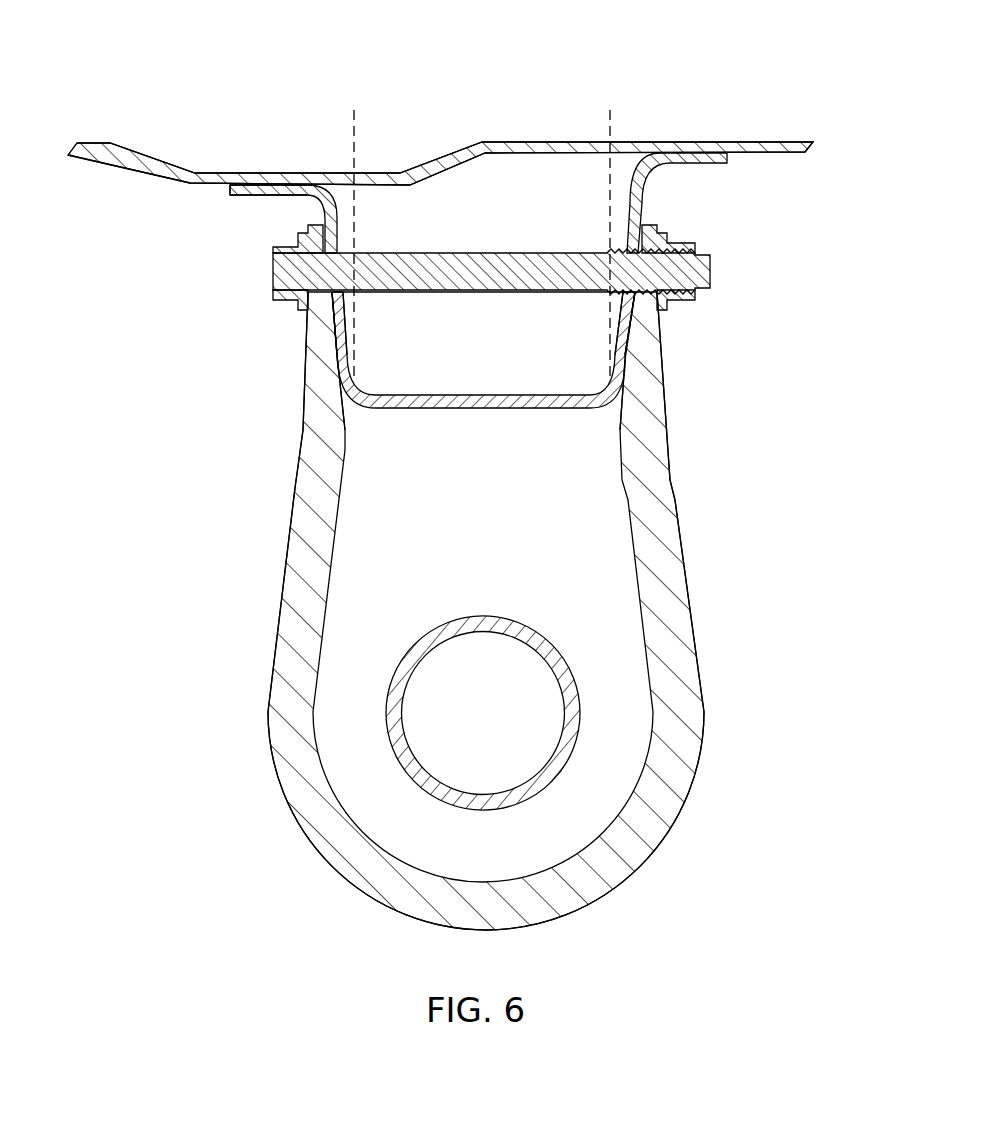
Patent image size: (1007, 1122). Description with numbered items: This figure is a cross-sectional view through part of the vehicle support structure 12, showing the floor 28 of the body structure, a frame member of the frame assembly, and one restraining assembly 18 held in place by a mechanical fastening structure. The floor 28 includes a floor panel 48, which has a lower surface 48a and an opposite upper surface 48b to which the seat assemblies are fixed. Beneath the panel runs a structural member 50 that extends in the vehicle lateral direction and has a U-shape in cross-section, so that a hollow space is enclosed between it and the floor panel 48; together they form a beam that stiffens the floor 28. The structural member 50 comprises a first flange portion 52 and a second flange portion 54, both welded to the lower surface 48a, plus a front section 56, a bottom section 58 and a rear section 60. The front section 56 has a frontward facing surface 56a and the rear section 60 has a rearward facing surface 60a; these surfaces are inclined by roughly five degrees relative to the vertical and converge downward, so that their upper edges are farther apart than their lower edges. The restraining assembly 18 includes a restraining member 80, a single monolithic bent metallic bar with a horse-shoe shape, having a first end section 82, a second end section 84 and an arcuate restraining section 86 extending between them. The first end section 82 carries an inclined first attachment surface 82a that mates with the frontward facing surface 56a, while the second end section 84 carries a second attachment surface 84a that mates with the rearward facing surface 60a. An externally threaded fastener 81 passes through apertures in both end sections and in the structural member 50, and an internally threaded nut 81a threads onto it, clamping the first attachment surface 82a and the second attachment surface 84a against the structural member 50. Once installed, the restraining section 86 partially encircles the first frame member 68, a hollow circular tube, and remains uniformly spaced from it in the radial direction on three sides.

The vehicle support structure 12 is at (592, 38).
The restraining assembly 18 is at (482, 625).
The floor 28 is at (250, 161).
The floor panel 48 is at (513, 142).
The lower surface 48a is at (561, 155).
The upper surface 48b is at (531, 142).
The structural member 50 is at (333, 217).
The first flange portion 52 is at (248, 198).
The second flange portion 54 is at (700, 165).
The front section 56 is at (340, 325).
The frontward facing surface 56a is at (335, 352).
The bottom section 58 is at (462, 396).
The rear section 60 is at (628, 327).
The rearward facing surface 60a is at (628, 370).
The first frame member 68 is at (417, 643).
The restraining member 80 is at (694, 550).
The fastener 81 is at (287, 283).
The internally threaded nut 81a is at (674, 247).
The first end section 82 is at (325, 443).
The first attachment surface 82a is at (337, 361).
The second end section 84 is at (644, 417).
The second attachment surface 84a is at (628, 340).
The restraining section 86 is at (510, 913).